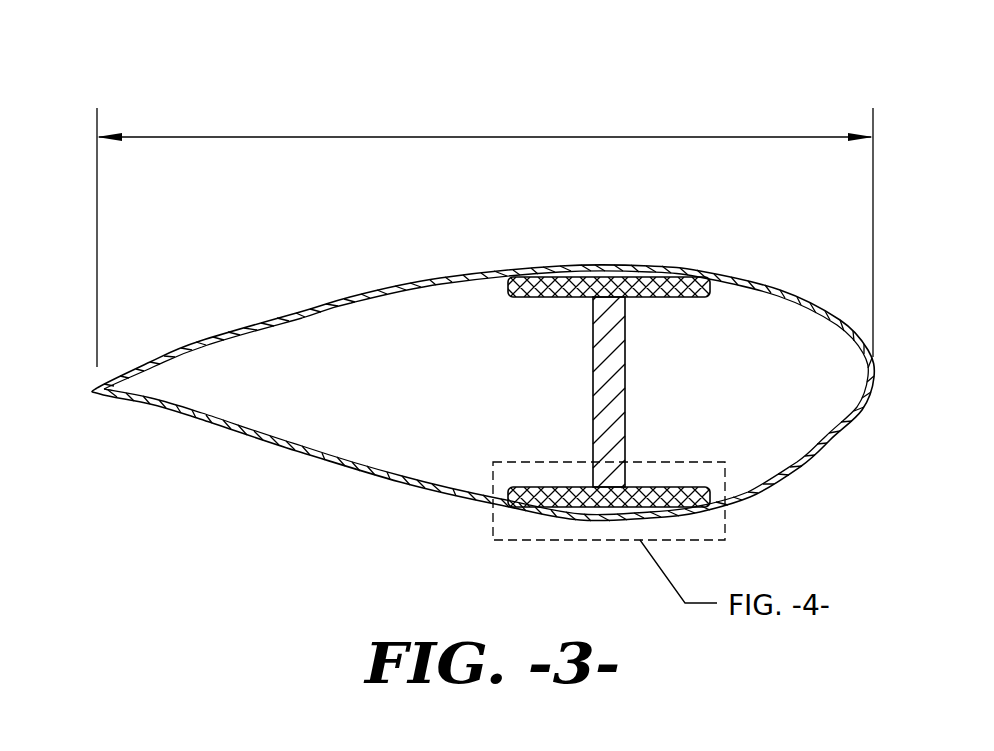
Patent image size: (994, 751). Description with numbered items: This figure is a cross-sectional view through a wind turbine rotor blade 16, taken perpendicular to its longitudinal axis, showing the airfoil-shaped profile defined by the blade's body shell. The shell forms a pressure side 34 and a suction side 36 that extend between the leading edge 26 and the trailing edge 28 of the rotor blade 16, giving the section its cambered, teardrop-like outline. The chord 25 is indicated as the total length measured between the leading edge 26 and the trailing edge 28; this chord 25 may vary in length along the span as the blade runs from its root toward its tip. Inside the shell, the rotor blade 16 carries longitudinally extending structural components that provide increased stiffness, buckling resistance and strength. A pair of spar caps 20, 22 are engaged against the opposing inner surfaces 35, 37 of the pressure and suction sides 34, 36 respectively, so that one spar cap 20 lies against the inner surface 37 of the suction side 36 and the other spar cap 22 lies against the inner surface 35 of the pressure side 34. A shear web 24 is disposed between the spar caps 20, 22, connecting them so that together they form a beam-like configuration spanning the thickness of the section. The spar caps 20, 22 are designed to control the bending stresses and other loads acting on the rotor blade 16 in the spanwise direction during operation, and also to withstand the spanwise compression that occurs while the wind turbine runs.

The rotor blade 16 is at (483, 292).
The spar cap 20 is at (650, 277).
The spar cap 22 is at (678, 510).
The shear web 24 is at (627, 445).
The chord 25 is at (356, 136).
The leading edge 26 is at (876, 378).
The trailing edge 28 is at (96, 408).
The pressure side 34 is at (382, 481).
The inner surface 35 is at (290, 430).
The suction side 36 is at (388, 285).
The inner surface 37 is at (350, 306).